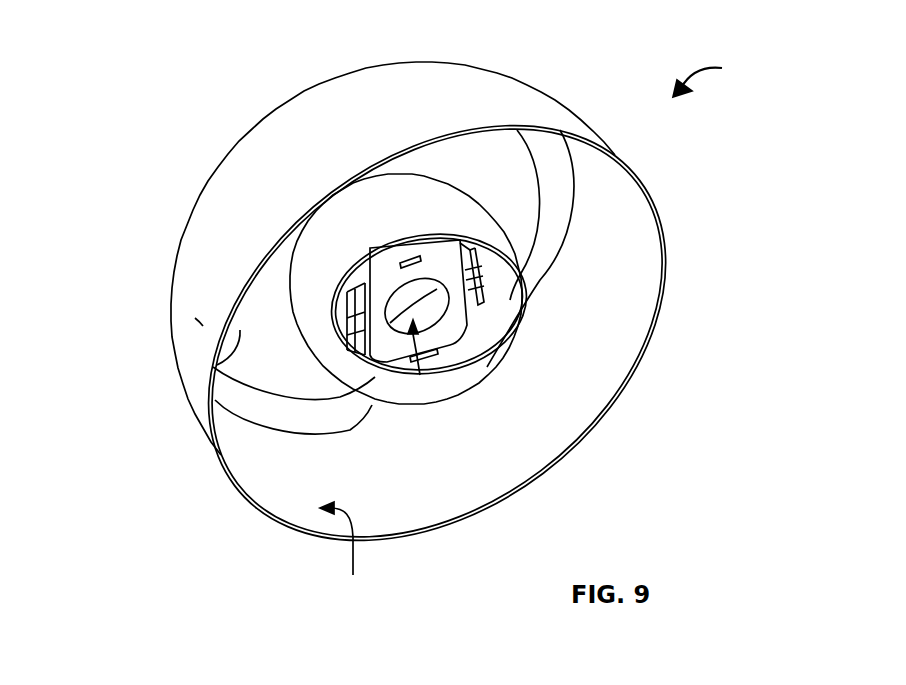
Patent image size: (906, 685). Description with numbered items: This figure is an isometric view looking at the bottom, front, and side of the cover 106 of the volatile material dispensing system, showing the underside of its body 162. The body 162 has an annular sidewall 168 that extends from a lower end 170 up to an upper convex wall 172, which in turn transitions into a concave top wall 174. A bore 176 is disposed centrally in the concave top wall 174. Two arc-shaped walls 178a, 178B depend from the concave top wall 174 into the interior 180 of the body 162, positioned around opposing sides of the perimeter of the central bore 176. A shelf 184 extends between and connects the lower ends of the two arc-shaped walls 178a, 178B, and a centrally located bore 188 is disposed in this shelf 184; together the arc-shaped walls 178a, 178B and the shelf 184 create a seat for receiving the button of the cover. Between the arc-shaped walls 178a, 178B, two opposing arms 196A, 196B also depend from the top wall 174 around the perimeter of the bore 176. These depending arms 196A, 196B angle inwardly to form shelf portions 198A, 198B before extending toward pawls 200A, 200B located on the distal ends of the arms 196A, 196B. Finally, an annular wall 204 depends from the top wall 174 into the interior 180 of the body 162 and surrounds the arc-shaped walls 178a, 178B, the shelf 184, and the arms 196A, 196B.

The cover 106 is at (723, 76).
The body 162 is at (533, 85).
The annular sidewall 168 is at (195, 322).
The lower end 170 is at (618, 403).
The upper convex wall 172 is at (552, 231).
The concave top wall 174 is at (217, 365).
The bore 176 is at (467, 343).
The arc-shaped wall 178a is at (435, 235).
The arc-shaped wall 178B is at (405, 362).
The interior 180 is at (347, 554).
The shelf 184 is at (380, 400).
The bore 188 is at (429, 303).
The arm 196A is at (481, 294).
The arm 196B is at (350, 300).
The shelf portion 198A is at (482, 257).
The shelf portion 198B is at (352, 393).
The pawl 200A is at (485, 279).
The pawl 200B is at (355, 337).
The annular wall 204 is at (510, 350).